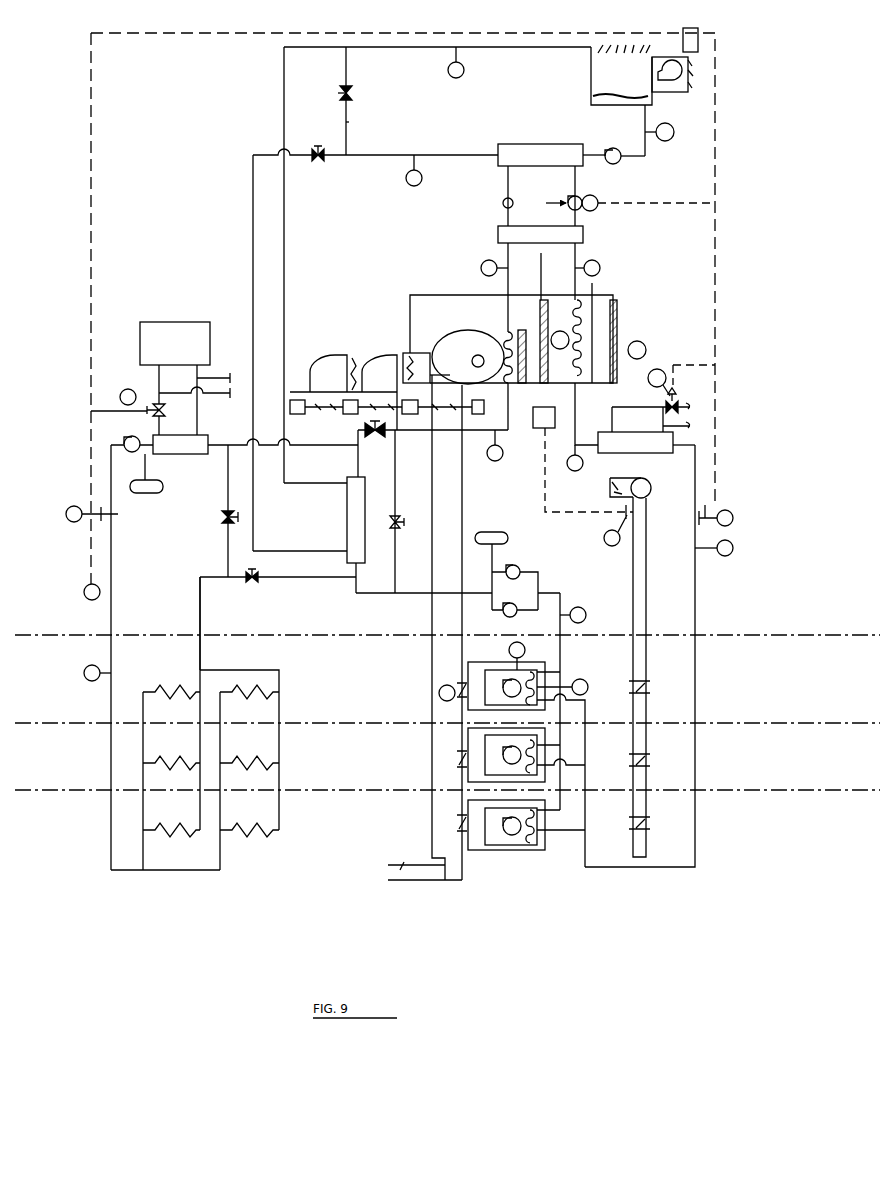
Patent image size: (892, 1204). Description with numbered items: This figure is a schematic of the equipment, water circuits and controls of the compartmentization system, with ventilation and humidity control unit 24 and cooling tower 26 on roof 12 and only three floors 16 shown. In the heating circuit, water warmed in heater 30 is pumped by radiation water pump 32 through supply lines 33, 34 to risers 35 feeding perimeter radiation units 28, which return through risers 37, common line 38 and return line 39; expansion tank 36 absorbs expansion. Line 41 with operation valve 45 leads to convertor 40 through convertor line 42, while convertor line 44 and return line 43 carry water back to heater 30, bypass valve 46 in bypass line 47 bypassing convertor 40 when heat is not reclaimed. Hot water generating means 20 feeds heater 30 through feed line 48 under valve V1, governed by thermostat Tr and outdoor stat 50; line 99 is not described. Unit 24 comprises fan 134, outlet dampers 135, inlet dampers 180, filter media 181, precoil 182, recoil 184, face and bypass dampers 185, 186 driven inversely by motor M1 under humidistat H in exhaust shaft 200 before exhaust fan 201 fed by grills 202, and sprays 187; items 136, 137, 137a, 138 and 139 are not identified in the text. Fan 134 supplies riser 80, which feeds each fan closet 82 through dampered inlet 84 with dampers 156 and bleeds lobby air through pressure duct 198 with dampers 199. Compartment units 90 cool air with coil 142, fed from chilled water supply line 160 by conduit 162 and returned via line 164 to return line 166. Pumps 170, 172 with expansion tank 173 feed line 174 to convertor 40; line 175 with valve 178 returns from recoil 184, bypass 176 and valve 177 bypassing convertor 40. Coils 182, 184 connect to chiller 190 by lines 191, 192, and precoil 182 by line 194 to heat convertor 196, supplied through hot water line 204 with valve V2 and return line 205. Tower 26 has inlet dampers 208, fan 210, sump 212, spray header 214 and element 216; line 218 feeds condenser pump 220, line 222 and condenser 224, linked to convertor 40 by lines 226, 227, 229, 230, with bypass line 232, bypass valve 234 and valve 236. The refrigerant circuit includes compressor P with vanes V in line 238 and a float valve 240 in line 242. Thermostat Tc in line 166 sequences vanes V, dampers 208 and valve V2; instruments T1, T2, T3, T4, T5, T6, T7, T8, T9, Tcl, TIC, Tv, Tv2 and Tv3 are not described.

The roof 12 is at (340, 635).
The floor 16 is at (392, 711).
The hot water generating means 20 is at (175, 343).
The ventilation and humidity control apparatus 24 is at (434, 293).
The cooling tower 26 is at (588, 70).
The perimeter radiation units 28 is at (256, 752).
The heater 30 is at (178, 454).
The radiation water pump 32 is at (130, 435).
The radiation supply line 33 is at (113, 620).
The radiation supply line 34 is at (168, 872).
The radiation risers 35 is at (141, 740).
The expansion tank 36 is at (147, 493).
The vertical return risers 37 is at (281, 703).
The common line 38 is at (237, 668).
The return line 39 is at (200, 612).
The convertor 40 is at (367, 540).
The line 41 is at (292, 579).
The converter line 42 is at (354, 584).
The radiation water return line 43 is at (248, 443).
The convertor line 44 is at (350, 463).
The operation valve 45 is at (252, 583).
The radiation water bypass valve 46 is at (222, 517).
The bypass line 47 is at (226, 545).
The feed line 48 is at (157, 378).
The outdoor temperature stat 50 is at (92, 600).
The vertical air riser 80 is at (430, 657).
The fan closet 82 is at (470, 660).
The dampered inlet 84 is at (455, 830).
The compartment unit 90 is at (528, 850).
The line 99 is at (210, 418).
The ventilation unit fan 134 is at (467, 357).
The motorized outlet dampers 135 is at (447, 415).
The filter 136 is at (412, 352).
The damper 137 is at (368, 415).
The damper 137a is at (336, 416).
The outside air inlet 138 is at (343, 373).
The return air inlet 139 is at (328, 373).
The water cooling coil 142 is at (532, 670).
The dampers 156 is at (455, 760).
The chilled water supply line 160 is at (560, 633).
The conduit 162 is at (553, 670).
The line 164 is at (586, 702).
The chilled water return line 166 is at (697, 670).
The chilled water pump 170 is at (513, 565).
The chilled water pump 172 is at (518, 612).
The expansion tank 173 is at (510, 538).
The line 174 is at (398, 588).
The line 175 is at (393, 442).
The chilled water bypass 176 is at (397, 500).
The chilled water bypass valve 177 is at (396, 527).
The valve 178 is at (372, 440).
The inlet motorized dampers 180 is at (616, 297).
The filter media 181 is at (593, 278).
The precoil 182 is at (575, 278).
The recoil 184 is at (505, 330).
The face damper 185 is at (543, 385).
The bypass damper 186 is at (553, 275).
The recirculating water sprays 187 is at (530, 385).
The chiller 190 is at (586, 235).
The line 191 is at (506, 255).
The line 192 is at (577, 255).
The line 194 is at (578, 402).
The heat convertor 196 is at (640, 453).
The pressure duct 198 is at (438, 882).
The dampers 199 is at (395, 877).
The main sanitary exhaust air shaft 200 is at (630, 578).
The exhaust fan 201 is at (652, 488).
The grills 202 is at (634, 822).
The hot water line 204 is at (655, 405).
The return line 205 is at (656, 426).
The inlet dampers 208 is at (693, 70).
The fan 210 is at (672, 56).
The sump 212 is at (588, 98).
The spray header 214 is at (556, 45).
The spray 216 is at (608, 47).
The water line 218 is at (648, 152).
The condenser pump 220 is at (613, 165).
The line 222 is at (594, 152).
The condenser 224 is at (540, 143).
The line 226 is at (383, 157).
The line 227 is at (300, 549).
The line 229 is at (316, 485).
The line 230 is at (367, 49).
The condensing water bypass line 232 is at (349, 122).
The bypass valve 234 is at (353, 93).
The valve 236 is at (320, 148).
The line 238 is at (572, 175).
The flow meter 240 is at (500, 203).
The line 242 is at (505, 175).
The damper motor M1 is at (544, 417).
The fan compressor P is at (559, 203).
The chiller capacity controlling vanes V is at (590, 203).
The thermostatically controlled valve V1 is at (128, 402).
The thermostatic responsive control valve V2 is at (659, 382).
The humidistat H is at (615, 525).
The thermostat T1 is at (714, 548).
The thermostat T2 is at (575, 458).
The thermostat T3 is at (587, 268).
The thermostat T4 is at (494, 268).
The thermostat T5 is at (495, 445).
The thermostat T6 is at (573, 615).
The thermostat T7 is at (659, 132).
The thermostat T8 is at (414, 170).
The thermostat T9 is at (456, 62).
The thermostat Tc is at (621, 587).
The thermostat Tcl is at (562, 687).
The thermostat Tr is at (92, 514).
The temperature controller TIC is at (97, 673).
The thermostat Tv is at (637, 350).
The thermostat Tv2 is at (562, 340).
The thermostat Tv3 is at (453, 692).